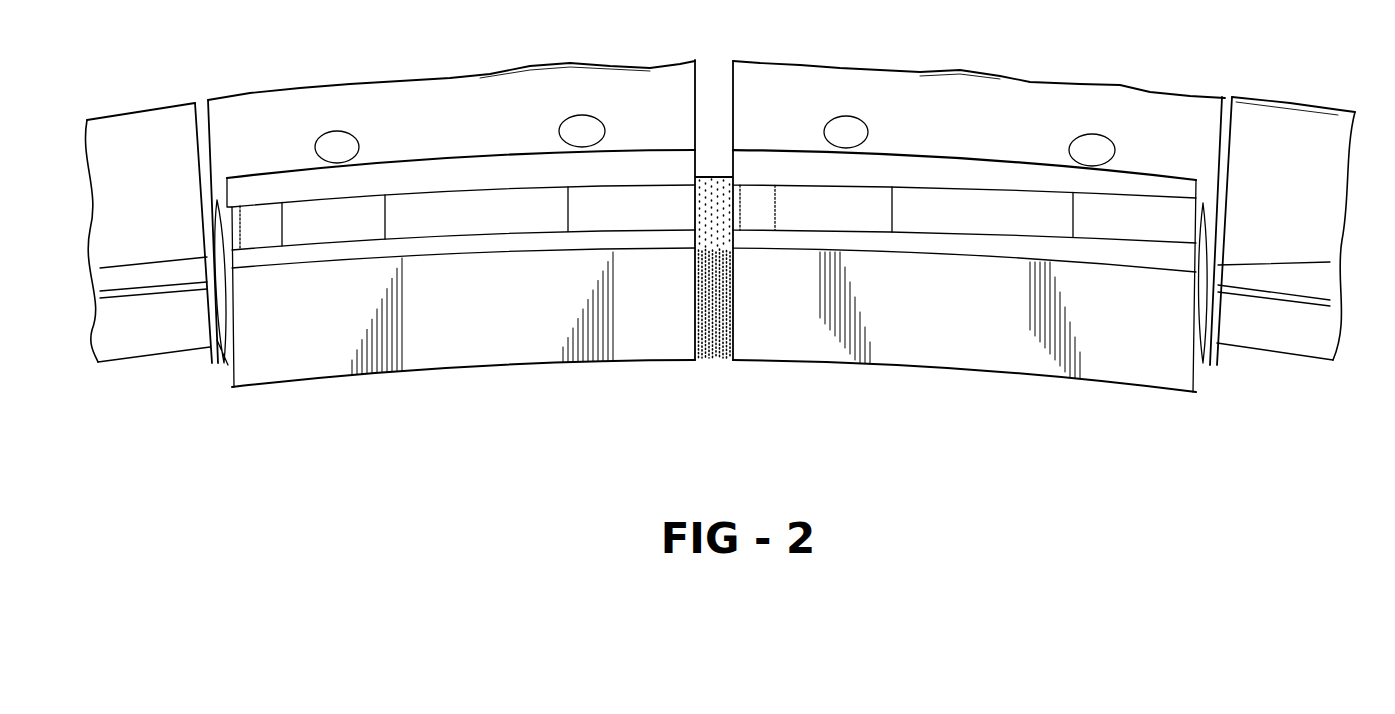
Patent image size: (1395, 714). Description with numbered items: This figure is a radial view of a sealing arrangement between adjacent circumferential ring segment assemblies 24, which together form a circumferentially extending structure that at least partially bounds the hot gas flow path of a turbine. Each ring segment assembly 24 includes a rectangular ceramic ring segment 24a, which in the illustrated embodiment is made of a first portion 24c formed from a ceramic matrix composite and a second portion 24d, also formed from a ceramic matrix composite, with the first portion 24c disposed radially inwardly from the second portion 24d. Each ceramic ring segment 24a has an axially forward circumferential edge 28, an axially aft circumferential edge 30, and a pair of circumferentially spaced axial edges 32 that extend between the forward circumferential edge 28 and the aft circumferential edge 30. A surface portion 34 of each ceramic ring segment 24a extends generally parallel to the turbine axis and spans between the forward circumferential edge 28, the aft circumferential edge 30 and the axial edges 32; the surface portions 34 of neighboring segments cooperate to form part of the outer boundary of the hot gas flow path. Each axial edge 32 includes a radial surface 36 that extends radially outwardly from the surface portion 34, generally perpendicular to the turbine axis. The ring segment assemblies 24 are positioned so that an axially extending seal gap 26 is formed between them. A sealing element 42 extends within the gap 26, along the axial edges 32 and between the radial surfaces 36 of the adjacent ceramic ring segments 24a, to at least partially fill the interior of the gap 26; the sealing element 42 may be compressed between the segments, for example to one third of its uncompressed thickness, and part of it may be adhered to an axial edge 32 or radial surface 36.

The circumferential ring segment assembly 24 is at (205, 236).
The ceramic ring segment 24a is at (1234, 272).
The first portion 24c is at (1203, 337).
The second portion 24d is at (1210, 318).
The seal gap 26 is at (698, 223).
The axially forward circumferential edge 28 is at (304, 258).
The axially aft circumferential edge 30 is at (990, 372).
The axial edge 32 is at (233, 337).
The surface portion 34 is at (457, 318).
The radial surface 36 is at (233, 308).
The sealing element 42 is at (712, 361).